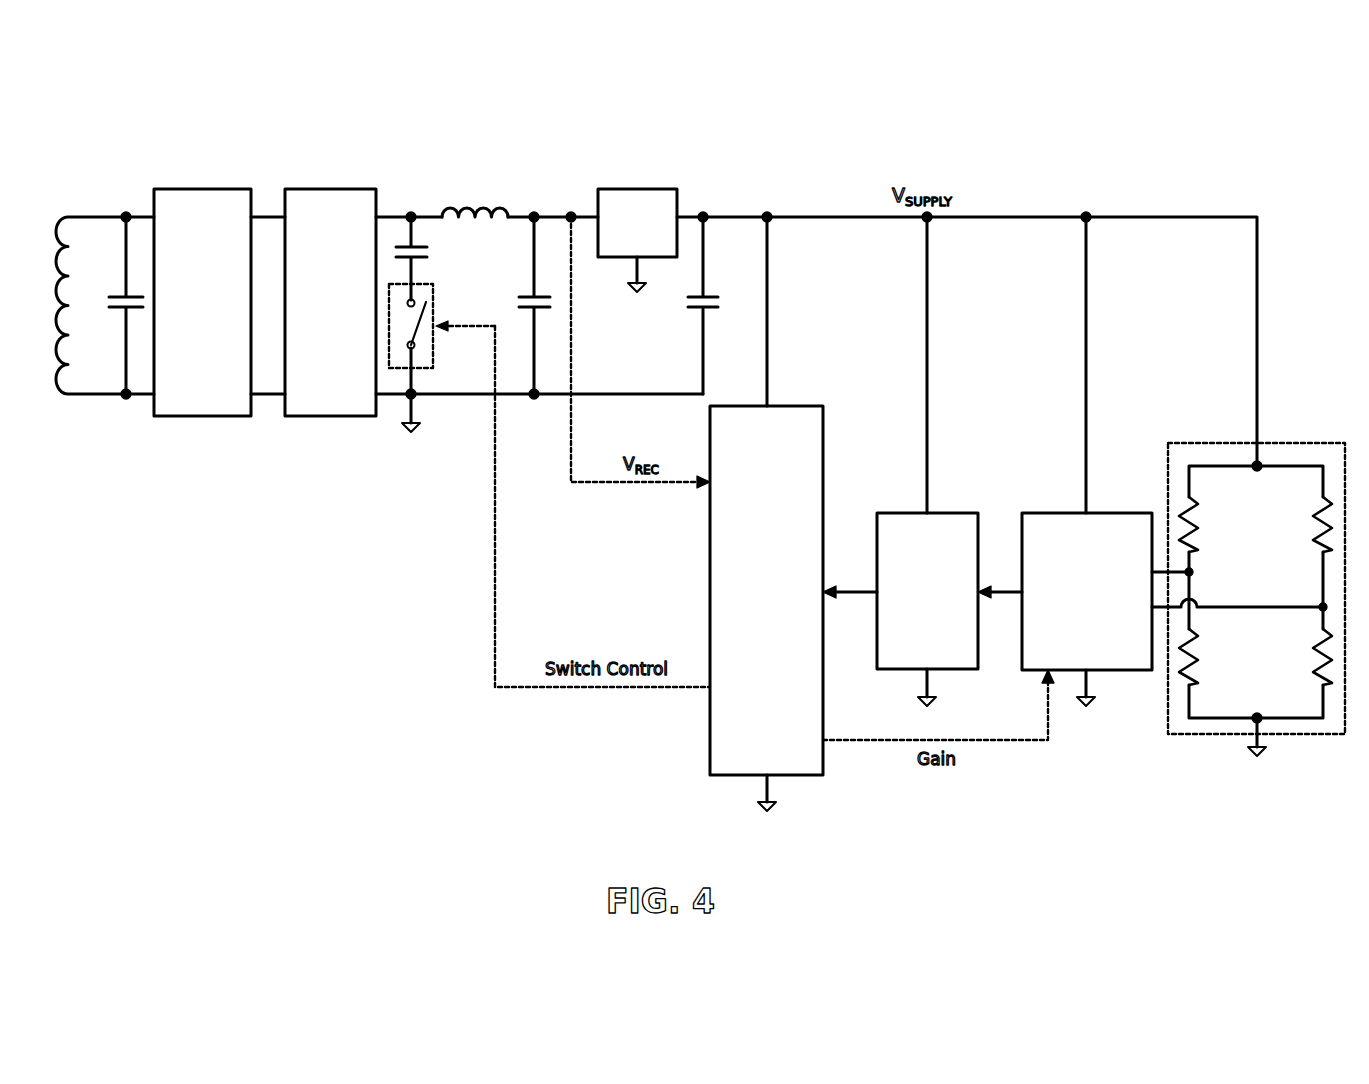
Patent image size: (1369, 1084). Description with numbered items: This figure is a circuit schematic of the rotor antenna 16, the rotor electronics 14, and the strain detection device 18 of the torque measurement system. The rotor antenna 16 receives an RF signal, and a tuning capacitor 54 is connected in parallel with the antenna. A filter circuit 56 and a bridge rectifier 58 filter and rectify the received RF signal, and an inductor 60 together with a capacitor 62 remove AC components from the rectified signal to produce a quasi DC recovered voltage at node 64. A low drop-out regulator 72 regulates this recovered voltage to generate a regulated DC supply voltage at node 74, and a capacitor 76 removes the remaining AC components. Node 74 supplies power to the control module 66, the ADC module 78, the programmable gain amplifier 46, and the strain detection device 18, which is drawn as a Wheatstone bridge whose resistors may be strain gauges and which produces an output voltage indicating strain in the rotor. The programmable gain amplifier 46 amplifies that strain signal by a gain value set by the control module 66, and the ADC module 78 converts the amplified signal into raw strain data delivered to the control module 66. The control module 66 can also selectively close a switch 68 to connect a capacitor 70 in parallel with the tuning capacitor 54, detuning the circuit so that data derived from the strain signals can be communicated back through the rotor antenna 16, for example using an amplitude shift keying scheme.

The rotor electronics 14 is at (697, 114).
The rotor antenna 16 is at (60, 217).
The strain detection device 18 is at (1287, 443).
The programmable gain amplifier 46 is at (1152, 459).
The capacitor 54 is at (118, 296).
The filter circuit 56 is at (202, 302).
The bridge rectifier 58 is at (330, 302).
The inductor 60 is at (461, 206).
The capacitor 62 is at (519, 301).
The node 64 is at (569, 211).
The control module 66 is at (766, 514).
The switch 68 is at (433, 368).
The capacitor 70 is at (429, 248).
The low drop-out regulator 72 is at (637, 240).
The node 74 is at (740, 215).
The capacitor 76 is at (688, 303).
The ADC module 78 is at (900, 459).